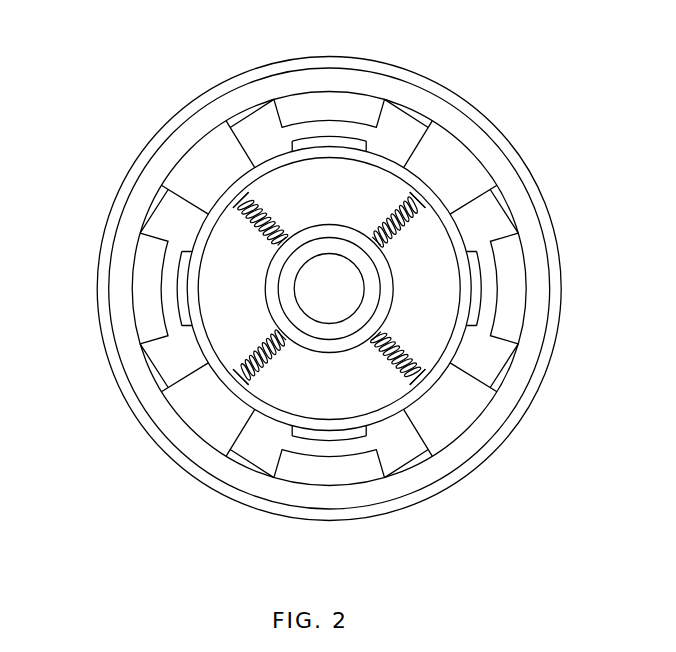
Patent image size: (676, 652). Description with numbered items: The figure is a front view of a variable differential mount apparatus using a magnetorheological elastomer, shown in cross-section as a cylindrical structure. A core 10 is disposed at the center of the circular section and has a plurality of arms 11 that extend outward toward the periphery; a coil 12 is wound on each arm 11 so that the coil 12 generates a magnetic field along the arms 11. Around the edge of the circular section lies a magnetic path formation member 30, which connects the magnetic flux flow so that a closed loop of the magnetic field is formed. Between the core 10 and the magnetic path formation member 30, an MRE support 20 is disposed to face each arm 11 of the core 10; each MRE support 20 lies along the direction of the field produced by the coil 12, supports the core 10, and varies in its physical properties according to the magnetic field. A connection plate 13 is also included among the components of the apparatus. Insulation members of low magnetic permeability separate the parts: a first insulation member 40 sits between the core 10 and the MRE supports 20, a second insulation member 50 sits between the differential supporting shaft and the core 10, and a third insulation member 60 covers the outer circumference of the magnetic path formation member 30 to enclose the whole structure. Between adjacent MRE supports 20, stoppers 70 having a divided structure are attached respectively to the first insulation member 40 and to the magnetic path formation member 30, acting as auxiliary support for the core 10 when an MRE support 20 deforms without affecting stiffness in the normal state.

The core 10 is at (394, 280).
The arm 11 is at (396, 220).
The coil 12 is at (247, 210).
The connection plate 13 is at (220, 227).
The MRE support 20 is at (192, 378).
The magnetic path formation member 30 is at (118, 268).
The first insulation member 40 is at (400, 420).
The second insulation member 50 is at (340, 257).
The third insulation member 60 is at (492, 440).
The stopper 70 is at (337, 440).